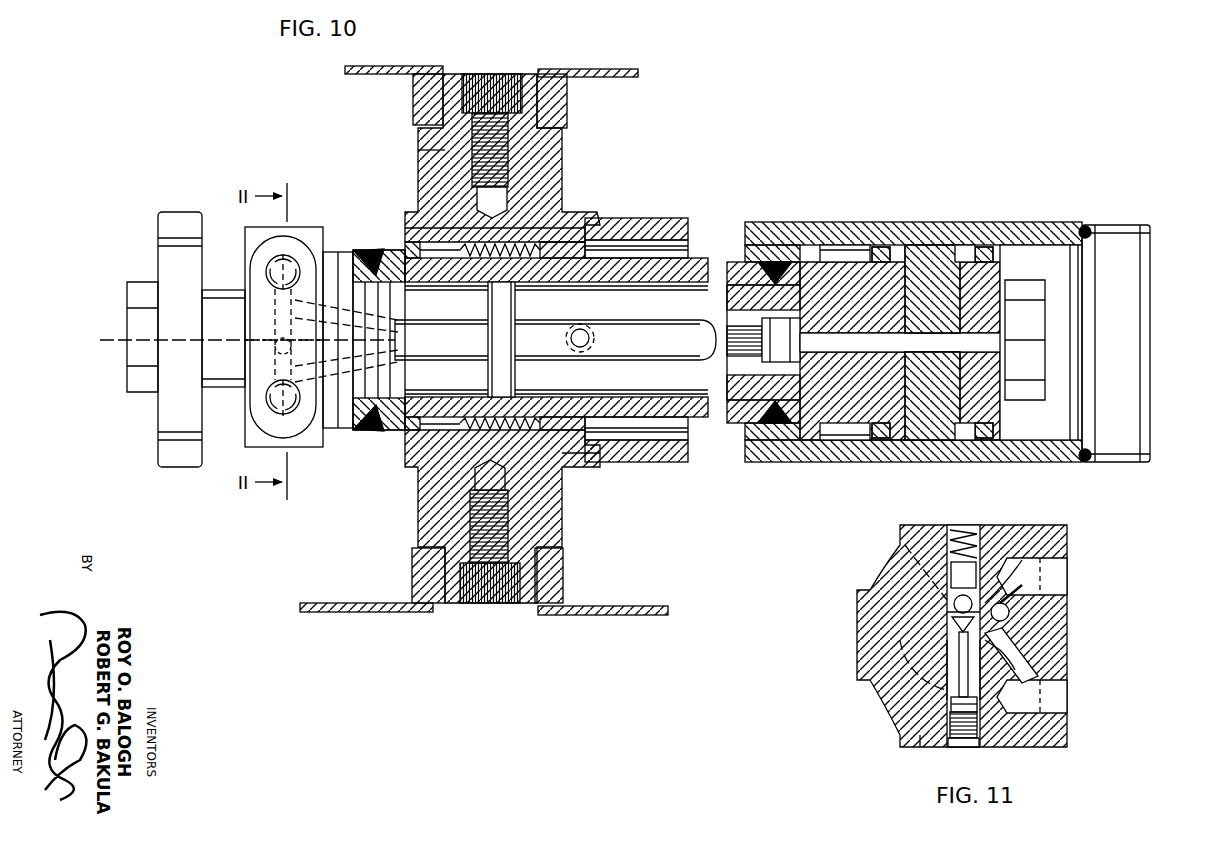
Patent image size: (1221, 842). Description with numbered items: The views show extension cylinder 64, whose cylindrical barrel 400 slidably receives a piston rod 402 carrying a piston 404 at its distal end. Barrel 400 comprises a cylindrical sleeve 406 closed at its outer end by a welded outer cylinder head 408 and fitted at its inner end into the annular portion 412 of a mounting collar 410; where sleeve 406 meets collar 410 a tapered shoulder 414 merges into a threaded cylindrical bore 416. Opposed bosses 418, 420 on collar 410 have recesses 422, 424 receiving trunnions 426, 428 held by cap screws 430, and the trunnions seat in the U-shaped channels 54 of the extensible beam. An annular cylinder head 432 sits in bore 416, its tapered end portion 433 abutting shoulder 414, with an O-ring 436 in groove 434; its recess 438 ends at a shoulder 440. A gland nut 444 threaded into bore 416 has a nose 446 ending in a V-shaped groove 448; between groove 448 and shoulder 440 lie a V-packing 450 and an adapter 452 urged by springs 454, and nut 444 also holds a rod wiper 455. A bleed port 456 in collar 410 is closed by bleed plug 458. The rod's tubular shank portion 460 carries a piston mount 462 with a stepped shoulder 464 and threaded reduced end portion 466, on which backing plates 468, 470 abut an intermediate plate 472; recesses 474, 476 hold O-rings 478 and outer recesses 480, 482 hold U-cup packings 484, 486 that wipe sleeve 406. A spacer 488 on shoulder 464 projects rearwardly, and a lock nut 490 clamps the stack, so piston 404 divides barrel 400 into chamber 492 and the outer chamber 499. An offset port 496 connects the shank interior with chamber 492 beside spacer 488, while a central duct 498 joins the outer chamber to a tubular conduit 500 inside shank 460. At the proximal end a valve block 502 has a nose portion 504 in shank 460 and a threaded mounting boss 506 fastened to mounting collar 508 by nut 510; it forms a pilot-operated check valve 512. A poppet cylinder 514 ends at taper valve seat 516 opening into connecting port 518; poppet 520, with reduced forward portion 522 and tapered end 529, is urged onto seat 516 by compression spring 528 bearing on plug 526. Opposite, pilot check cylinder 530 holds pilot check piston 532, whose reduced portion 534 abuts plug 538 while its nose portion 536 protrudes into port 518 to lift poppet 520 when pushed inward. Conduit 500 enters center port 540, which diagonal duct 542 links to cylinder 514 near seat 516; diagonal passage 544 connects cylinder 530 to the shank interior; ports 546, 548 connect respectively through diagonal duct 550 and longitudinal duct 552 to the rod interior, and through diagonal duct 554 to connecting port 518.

In FIG. 10, the U-shaped channels 54 is at (607, 68).
In FIG. 10, the extension cylinder 64 is at (283, 569).
In FIG. 10, the cylindrical barrel 400 is at (704, 215).
In FIG. 10, the piston rod 402 is at (740, 262).
In FIG. 10, the piston 404 is at (930, 262).
In FIG. 10, the cylindrical sleeve 406 is at (660, 218).
In FIG. 10, the outer cylinder head 408 is at (1135, 262).
In FIG. 10, the mounting collar 410 is at (563, 168).
In FIG. 10, the forwardly projecting annular portion 412 is at (572, 228).
In FIG. 10, the tapered shoulder 414 is at (560, 236).
In FIG. 10, the cylindrical bore 416 is at (478, 226).
In FIG. 10, the cylindrical boss 418 is at (430, 158).
In FIG. 10, the cylindrical boss 420 is at (555, 520).
In FIG. 10, the cylindrical recess 422 is at (428, 124).
In FIG. 10, the cylindrical recess 424 is at (425, 545).
In FIG. 10, the trunnion 426 is at (552, 118).
In FIG. 10, the trunnion 428 is at (530, 606).
In FIG. 10, the countersunk socket head cap screws 430 is at (496, 73).
In FIG. 10, the annular cylinder head 432 is at (577, 282).
In FIG. 10, the tapered end portion 433 is at (580, 445).
In FIG. 10, the annular groove 434 is at (570, 456).
In FIG. 10, the O-ring 436 is at (565, 470).
In FIG. 10, the outwardly opening recess 438 is at (452, 281).
In FIG. 10, the shoulder 440 is at (487, 286).
In FIG. 10, the gland nut 444 is at (400, 440).
In FIG. 10, the annular nose 446 is at (418, 420).
In FIG. 10, the annular V-shaped groove 448 is at (465, 417).
In FIG. 10, the V-packing 450 is at (502, 415).
In FIG. 10, the annular adapter 452 is at (507, 419).
In FIG. 10, the springs 454 is at (522, 422).
In FIG. 10, the rod wiper 455 is at (380, 424).
In FIG. 10, the bleed port 456 is at (593, 330).
In FIG. 10, the bleed plug 458 is at (590, 338).
In FIG. 10, the tubular shank portion 460 is at (745, 445).
In FIG. 10, the piston mount 462 is at (800, 440).
In FIG. 10, the stepped shoulder 464 is at (848, 440).
In FIG. 10, the diametrally reduced end portion 466 is at (1025, 268).
In FIG. 10, the annular backing plate 468 is at (864, 262).
In FIG. 10, the annular backing plate 470 is at (998, 262).
In FIG. 10, the annular intermediate plate 472 is at (945, 268).
In FIG. 10, the recess 474 is at (915, 245).
In FIG. 10, the recess 476 is at (978, 262).
In FIG. 10, the O-rings 478 is at (912, 450).
In FIG. 10, the enlarged recess 480 is at (880, 440).
In FIG. 10, the enlarged recess 482 is at (990, 440).
In FIG. 10, the U-cup packing 484 is at (900, 262).
In FIG. 10, the U-cup packing 486 is at (985, 450).
In FIG. 10, the annular spacer 488 is at (832, 260).
In FIG. 10, the lock nut 490 is at (1060, 360).
In FIG. 10, the fluid chamber 492 is at (668, 450).
In FIG. 10, the offset port 496 is at (797, 262).
In FIG. 10, the longitudinally extending duct 498 is at (1020, 340).
In FIG. 10, the chamber 499 is at (1060, 422).
In FIG. 10, the coaxial tubular conduit 500 is at (690, 352).
In FIG. 10, the valve block 502 is at (238, 220).
In FIG. 10, the cylindrical nose portion 504 is at (333, 447).
In FIG. 10, the threaded mounting boss 506 is at (128, 332).
In FIG. 10, the mounting collar 508 is at (172, 420).
In FIG. 10, the nut 510 is at (165, 392).
In FIG. 11, the pilot-operated check valve 512 is at (1125, 600).
In FIG. 11, the poppet cylinder 514 is at (975, 565).
In FIG. 11, the taper valve seat 516 is at (947, 624).
In FIG. 11, the coaxial connecting port 518 is at (958, 645).
In FIG. 11, the poppet 520 is at (947, 598).
In FIG. 11, the diametrally reduced forward portion 522 is at (947, 612).
In FIG. 11, the plug 526 is at (963, 527).
In FIG. 11, the coiled compression spring 528 is at (947, 555).
In FIG. 11, the passage 529 is at (1010, 652).
In FIG. 11, the pilot check cylinder 530 is at (950, 702).
In FIG. 11, the pilot check piston 532 is at (949, 722).
In FIG. 11, the diametrally reduced portion 534 is at (947, 735).
In FIG. 11, the nose portion 536 is at (950, 660).
In FIG. 11, the plug 538 is at (963, 747).
In FIG. 10, the center port 540 is at (365, 318).
In FIG. 10, the diagonal fluid duct 542 is at (310, 262).
In FIG. 11, the diagonal fluid duct 542 is at (1022, 560).
In FIG. 10, the diagonal fluid passage 544 is at (303, 442).
In FIG. 11, the diagonal fluid passage 544 is at (927, 747).
In FIG. 10, the port 546 is at (284, 254).
In FIG. 11, the port 546 is at (1040, 576).
In FIG. 10, the port 548 is at (280, 400).
In FIG. 11, the port 548 is at (1055, 700).
In FIG. 10, the diagonal duct 550 is at (285, 268).
In FIG. 11, the diagonal duct 550 is at (1010, 607).
In FIG. 10, the longitudinally extending duct 552 is at (342, 290).
In FIG. 11, the longitudinally extending duct 552 is at (1012, 617).
In FIG. 10, the diagonal duct 554 is at (281, 354).
In FIG. 11, the diagonal duct 554 is at (1030, 672).